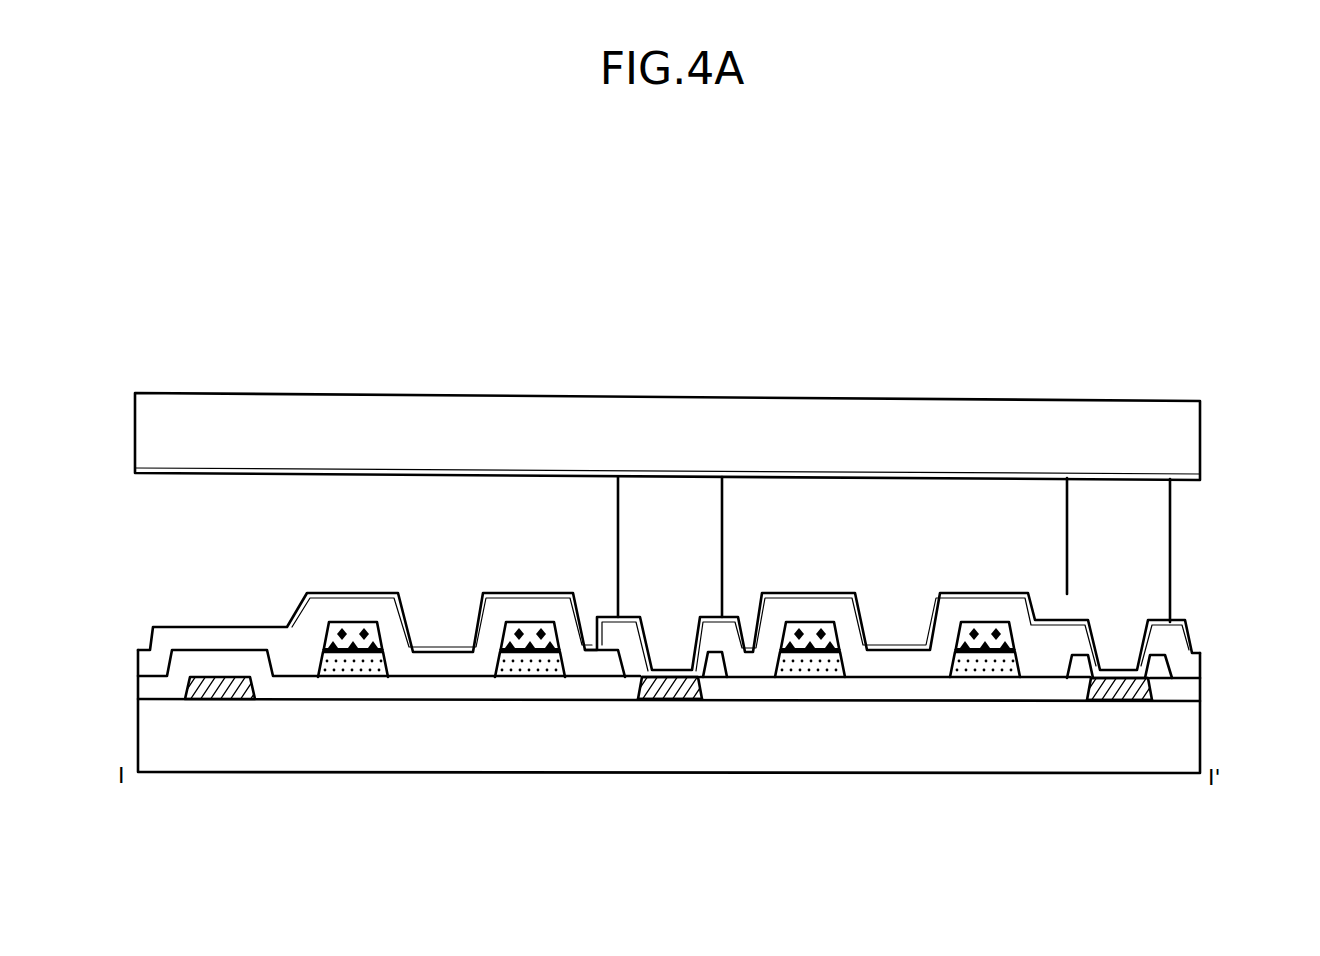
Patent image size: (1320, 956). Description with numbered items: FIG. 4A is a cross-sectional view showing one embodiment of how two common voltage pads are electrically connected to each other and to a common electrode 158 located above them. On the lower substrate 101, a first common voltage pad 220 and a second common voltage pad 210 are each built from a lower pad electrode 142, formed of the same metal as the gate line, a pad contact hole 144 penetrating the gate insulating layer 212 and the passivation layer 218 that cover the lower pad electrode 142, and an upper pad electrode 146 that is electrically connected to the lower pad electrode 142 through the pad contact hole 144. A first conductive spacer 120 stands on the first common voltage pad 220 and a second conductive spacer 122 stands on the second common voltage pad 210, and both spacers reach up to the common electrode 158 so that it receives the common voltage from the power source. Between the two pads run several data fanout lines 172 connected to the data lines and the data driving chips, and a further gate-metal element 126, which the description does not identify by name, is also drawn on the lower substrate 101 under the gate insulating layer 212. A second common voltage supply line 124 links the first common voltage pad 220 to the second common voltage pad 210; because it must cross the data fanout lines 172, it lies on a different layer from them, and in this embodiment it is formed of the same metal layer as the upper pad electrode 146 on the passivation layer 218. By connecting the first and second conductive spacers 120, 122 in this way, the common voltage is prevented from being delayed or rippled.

The lower substrate 101 is at (1200, 737).
The first conductive spacer 120 is at (1170, 537).
The second conductive spacer 122 is at (722, 506).
The second common voltage supply line 124 is at (442, 652).
The gate electrode 126 is at (215, 700).
The lower pad electrode 142 is at (648, 695).
The pad contact hole 144 is at (667, 695).
The upper pad electrode 146 is at (687, 695).
The common electrode 158 is at (1200, 477).
The data fanout lines 172 is at (351, 630).
The second common voltage pad 210 is at (608, 822).
The gate insulating layer 212 is at (1200, 688).
The passivation layer 218 is at (1200, 660).
The first common voltage pad 220 is at (1057, 822).